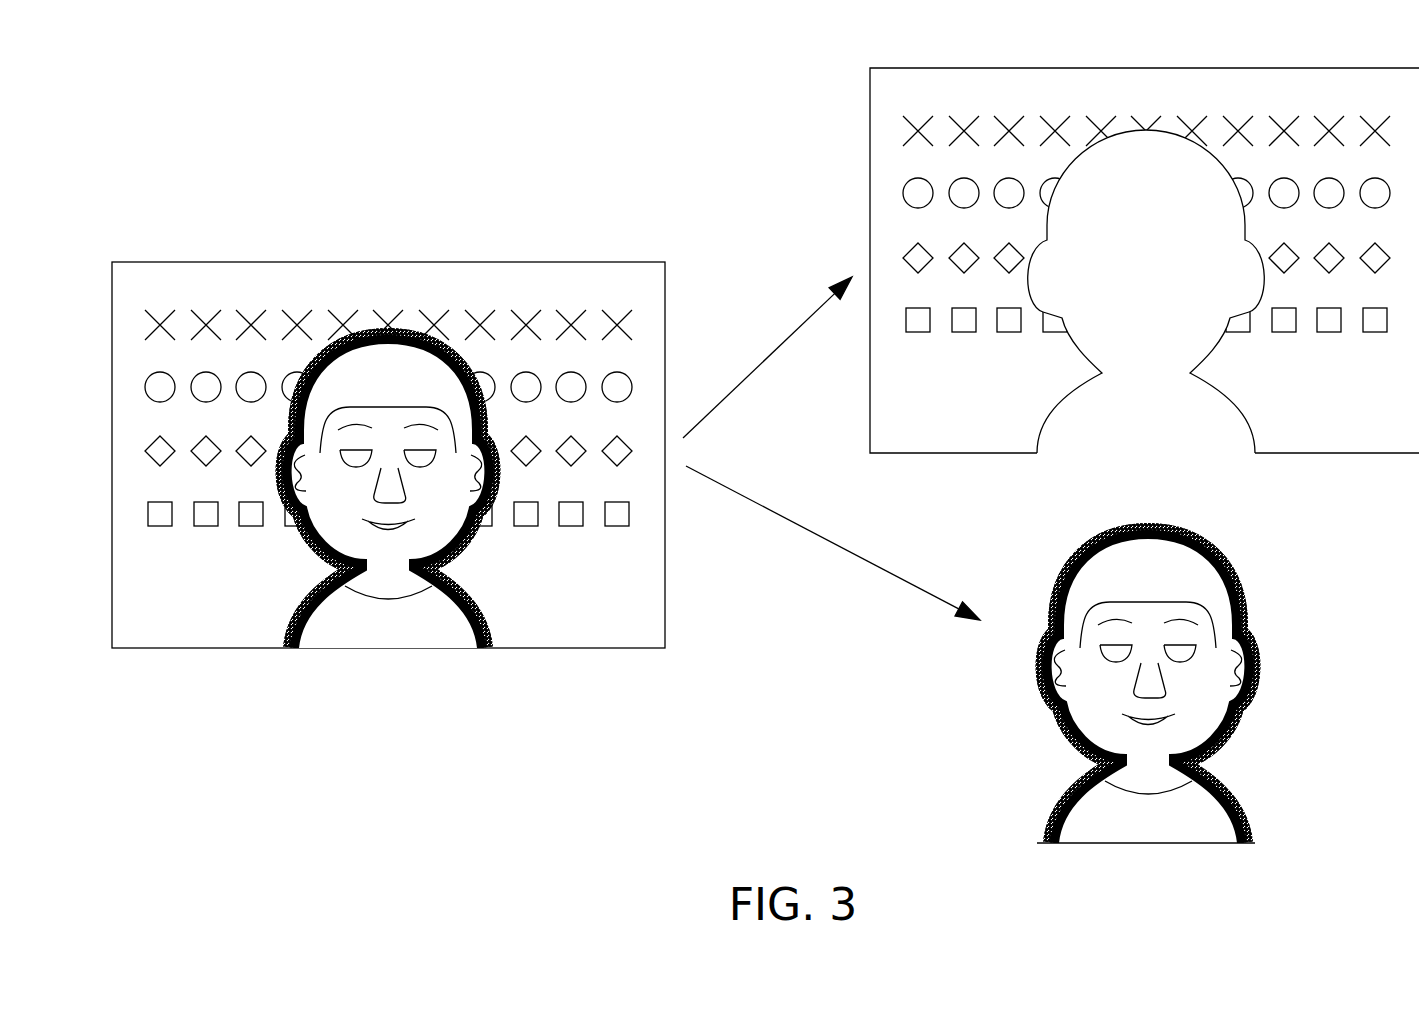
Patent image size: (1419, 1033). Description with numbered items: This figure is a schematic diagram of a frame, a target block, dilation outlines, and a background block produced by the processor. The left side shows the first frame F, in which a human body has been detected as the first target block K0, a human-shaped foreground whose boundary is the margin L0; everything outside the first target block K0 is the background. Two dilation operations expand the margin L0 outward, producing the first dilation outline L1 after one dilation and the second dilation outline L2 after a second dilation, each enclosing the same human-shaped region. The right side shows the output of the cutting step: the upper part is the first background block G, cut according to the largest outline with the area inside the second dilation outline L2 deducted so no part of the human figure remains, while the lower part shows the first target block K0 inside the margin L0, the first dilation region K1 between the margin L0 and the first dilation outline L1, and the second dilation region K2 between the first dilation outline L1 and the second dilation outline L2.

The first frame F is at (585, 265).
The first background block G is at (1305, 68).
The margin of the first target block L0 is at (453, 341).
The first dilation outline L1 is at (407, 328).
The second dilation outline L2 is at (367, 326).
The first target block K0 is at (388, 649).
The first dilation region K1 is at (483, 650).
The second dilation region K2 is at (497, 650).